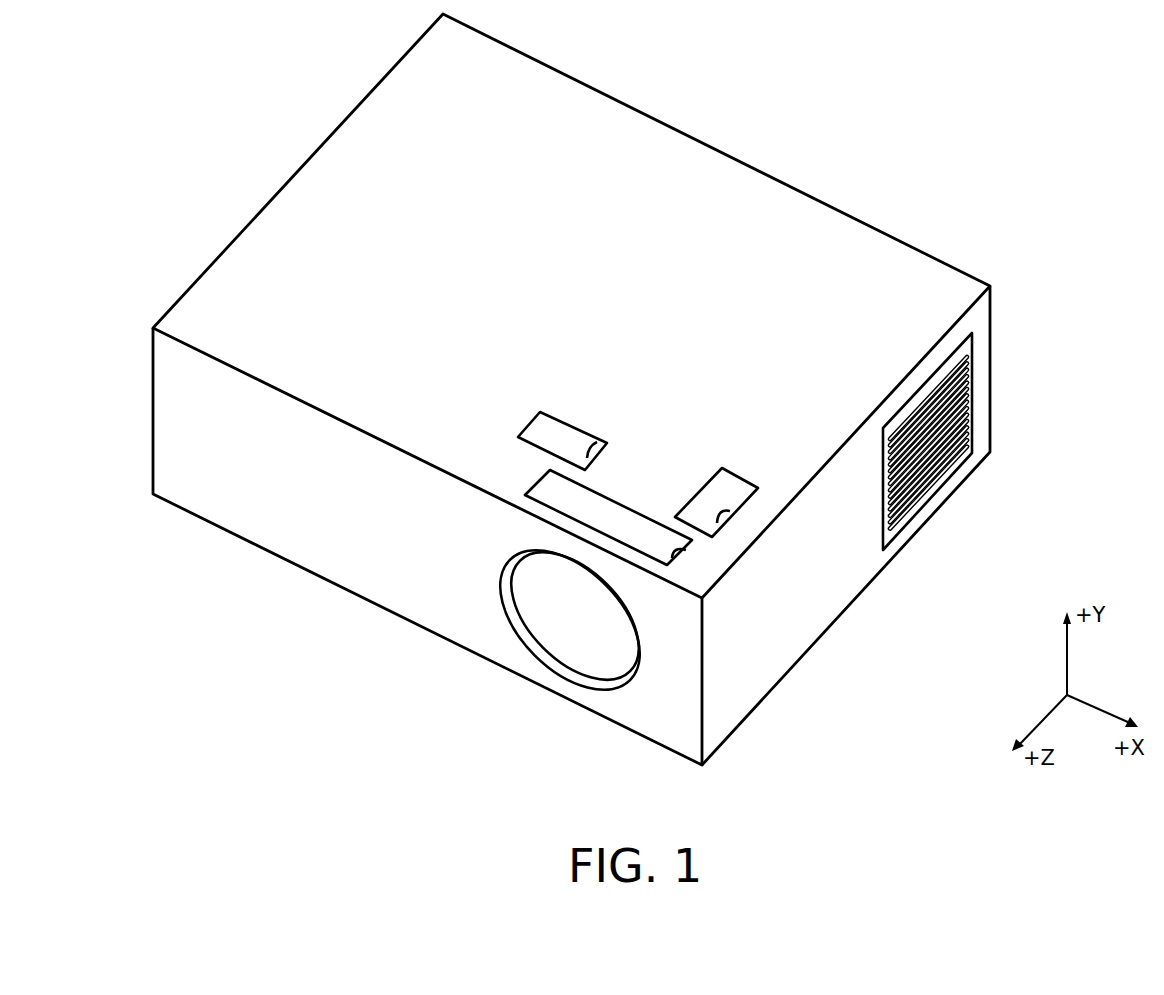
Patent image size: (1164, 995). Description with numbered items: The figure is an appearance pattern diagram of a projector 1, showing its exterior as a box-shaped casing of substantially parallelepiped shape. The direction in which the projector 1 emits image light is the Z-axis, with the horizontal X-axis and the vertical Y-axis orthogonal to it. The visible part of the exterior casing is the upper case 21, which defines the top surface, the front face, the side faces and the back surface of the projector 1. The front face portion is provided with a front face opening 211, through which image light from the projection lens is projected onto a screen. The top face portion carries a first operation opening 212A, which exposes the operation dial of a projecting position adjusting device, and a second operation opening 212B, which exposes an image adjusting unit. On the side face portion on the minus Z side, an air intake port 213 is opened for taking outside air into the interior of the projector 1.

The projector 1 is at (572, 389).
The upper case 21 is at (913, 263).
The front face opening 211 is at (528, 637).
The first operation opening 212A is at (592, 443).
The second operation opening 212B is at (680, 548).
The air intake port 213 is at (925, 467).